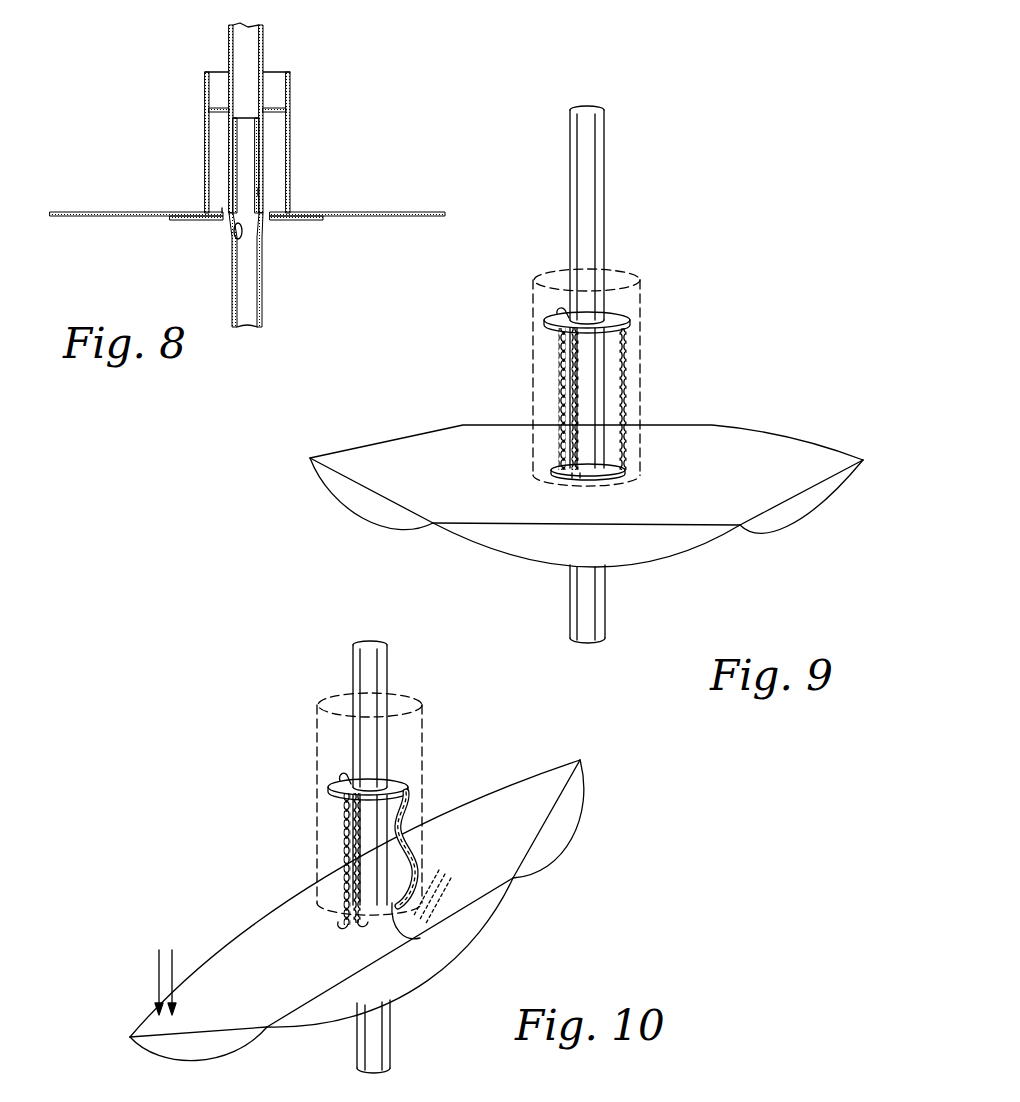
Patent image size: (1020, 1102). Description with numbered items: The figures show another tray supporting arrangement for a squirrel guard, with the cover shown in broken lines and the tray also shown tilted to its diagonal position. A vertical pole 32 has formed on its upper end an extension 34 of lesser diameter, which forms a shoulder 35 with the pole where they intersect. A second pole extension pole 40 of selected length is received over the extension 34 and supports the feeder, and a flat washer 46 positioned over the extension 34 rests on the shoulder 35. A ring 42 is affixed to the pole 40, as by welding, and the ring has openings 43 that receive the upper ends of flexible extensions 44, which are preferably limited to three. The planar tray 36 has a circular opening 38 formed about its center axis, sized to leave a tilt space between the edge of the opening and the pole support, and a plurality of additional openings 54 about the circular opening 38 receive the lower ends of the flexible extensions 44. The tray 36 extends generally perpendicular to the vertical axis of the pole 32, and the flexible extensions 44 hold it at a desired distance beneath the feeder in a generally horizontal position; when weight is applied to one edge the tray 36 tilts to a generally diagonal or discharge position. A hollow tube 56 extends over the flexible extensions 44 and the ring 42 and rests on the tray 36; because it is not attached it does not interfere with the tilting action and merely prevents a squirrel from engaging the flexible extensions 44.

In FIG. 9, the pole 32 is at (607, 597).
In FIG. 10, the pole 32 is at (373, 1036).
In FIG. 8, the extension 34 is at (264, 162).
In FIG. 8, the shoulder 35 is at (239, 238).
In FIG. 8, the tray 36 is at (365, 212).
In FIG. 9, the tray 36 is at (767, 477).
In FIG. 10, the tray 36 is at (357, 910).
In FIG. 9, the circular opening 38 is at (611, 474).
In FIG. 10, the circular opening 38 is at (418, 938).
In FIG. 8, the pole extension pole 40 is at (264, 53).
In FIG. 9, the pole extension pole 40 is at (605, 175).
In FIG. 10, the pole extension pole 40 is at (370, 773).
In FIG. 8, the ring 42 is at (208, 109).
In FIG. 9, the ring 42 is at (613, 317).
In FIG. 10, the ring 42 is at (392, 783).
In FIG. 9, the openings 43 is at (557, 313).
In FIG. 10, the openings 43 is at (340, 779).
In FIG. 9, the flexible extensions 44 is at (630, 368).
In FIG. 10, the flexible extensions 44 is at (410, 809).
In FIG. 8, the flat washer 46 is at (323, 218).
In FIG. 8, the openings 54 is at (222, 210).
In FIG. 9, the openings 54 is at (577, 478).
In FIG. 10, the openings 54 is at (362, 932).
In FIG. 8, the hollow tube 56 is at (290, 73).
In FIG. 9, the hollow tube 56 is at (534, 279).
In FIG. 10, the hollow tube 56 is at (317, 719).